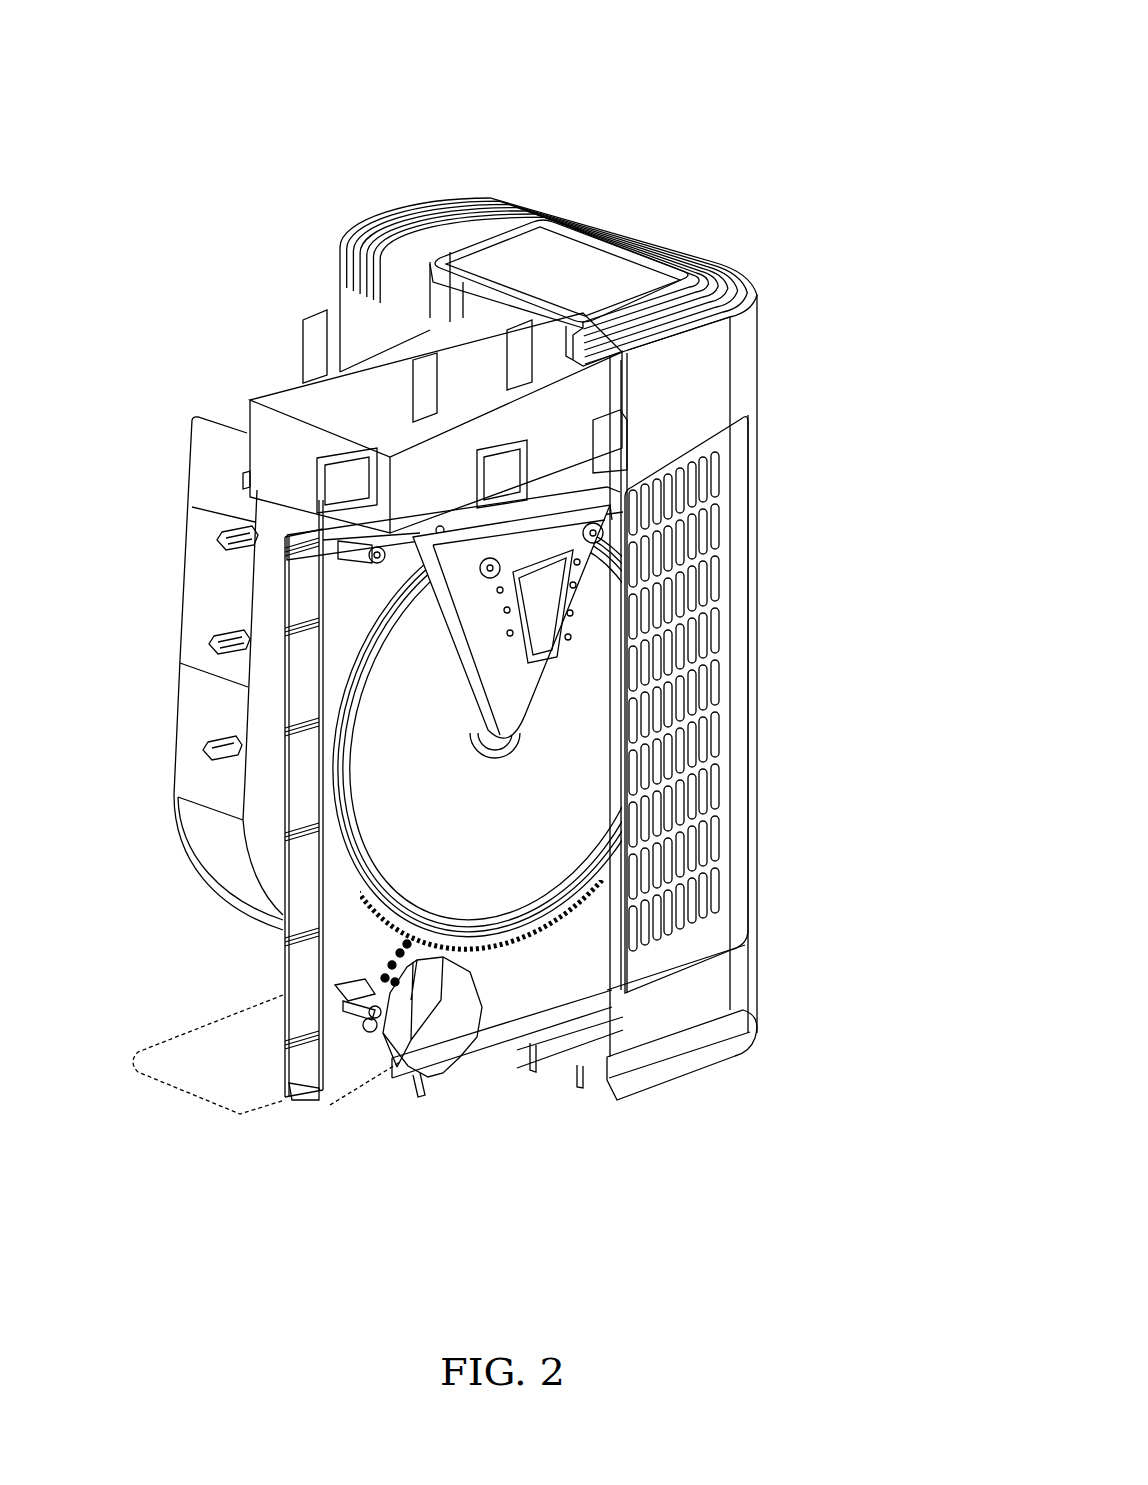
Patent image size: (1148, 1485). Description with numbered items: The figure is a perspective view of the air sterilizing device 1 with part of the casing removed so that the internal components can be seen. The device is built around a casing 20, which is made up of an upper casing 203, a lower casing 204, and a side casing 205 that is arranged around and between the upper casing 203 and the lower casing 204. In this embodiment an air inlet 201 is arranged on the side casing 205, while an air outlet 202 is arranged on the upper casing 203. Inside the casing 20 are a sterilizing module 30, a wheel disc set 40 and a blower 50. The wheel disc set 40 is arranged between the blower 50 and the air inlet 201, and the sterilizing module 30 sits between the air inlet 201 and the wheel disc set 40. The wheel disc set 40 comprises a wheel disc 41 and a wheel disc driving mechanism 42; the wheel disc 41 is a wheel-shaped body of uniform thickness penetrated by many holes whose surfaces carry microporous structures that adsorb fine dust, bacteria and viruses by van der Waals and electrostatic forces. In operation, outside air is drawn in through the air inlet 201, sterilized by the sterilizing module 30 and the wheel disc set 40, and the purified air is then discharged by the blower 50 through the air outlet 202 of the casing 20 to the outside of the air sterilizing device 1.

The air sterilizing device 1 is at (882, 52).
The casing 20 is at (765, 283).
The air inlet 201 is at (712, 703).
The air outlet 202 is at (378, 224).
The upper casing 203 is at (560, 260).
The lower casing 204 is at (656, 1100).
The side casing 205 is at (695, 383).
The sterilizing module 30 is at (485, 655).
The wheel disc set 40 is at (500, 1243).
The wheel disc 41 is at (522, 888).
The wheel disc driving mechanism 42 is at (406, 1042).
The blower 50 is at (235, 855).